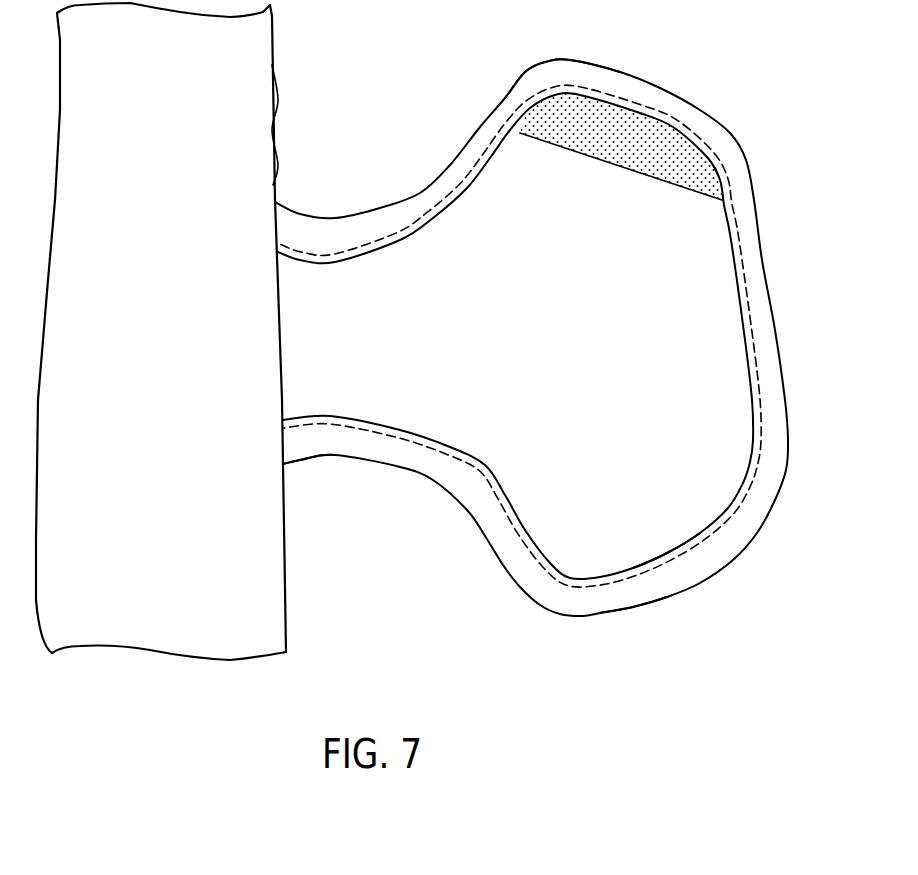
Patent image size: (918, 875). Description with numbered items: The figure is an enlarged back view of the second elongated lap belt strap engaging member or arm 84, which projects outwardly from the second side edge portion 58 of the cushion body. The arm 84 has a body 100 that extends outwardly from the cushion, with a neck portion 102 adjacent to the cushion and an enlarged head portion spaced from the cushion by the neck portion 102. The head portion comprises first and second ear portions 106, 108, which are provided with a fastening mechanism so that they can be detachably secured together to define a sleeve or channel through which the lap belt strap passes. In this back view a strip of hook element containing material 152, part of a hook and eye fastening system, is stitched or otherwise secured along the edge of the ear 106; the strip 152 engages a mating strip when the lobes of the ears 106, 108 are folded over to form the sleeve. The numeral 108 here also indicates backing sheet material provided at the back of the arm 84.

The second side edge portion 58 is at (284, 502).
The second elongated lap belt strap engaging member or arm 84 is at (641, 603).
The body 100 is at (731, 342).
The neck portion 102 is at (387, 405).
The first ear portion 106 is at (545, 68).
The second ear portion 108 is at (668, 544).
The strip of hook element containing material 152 is at (628, 131).